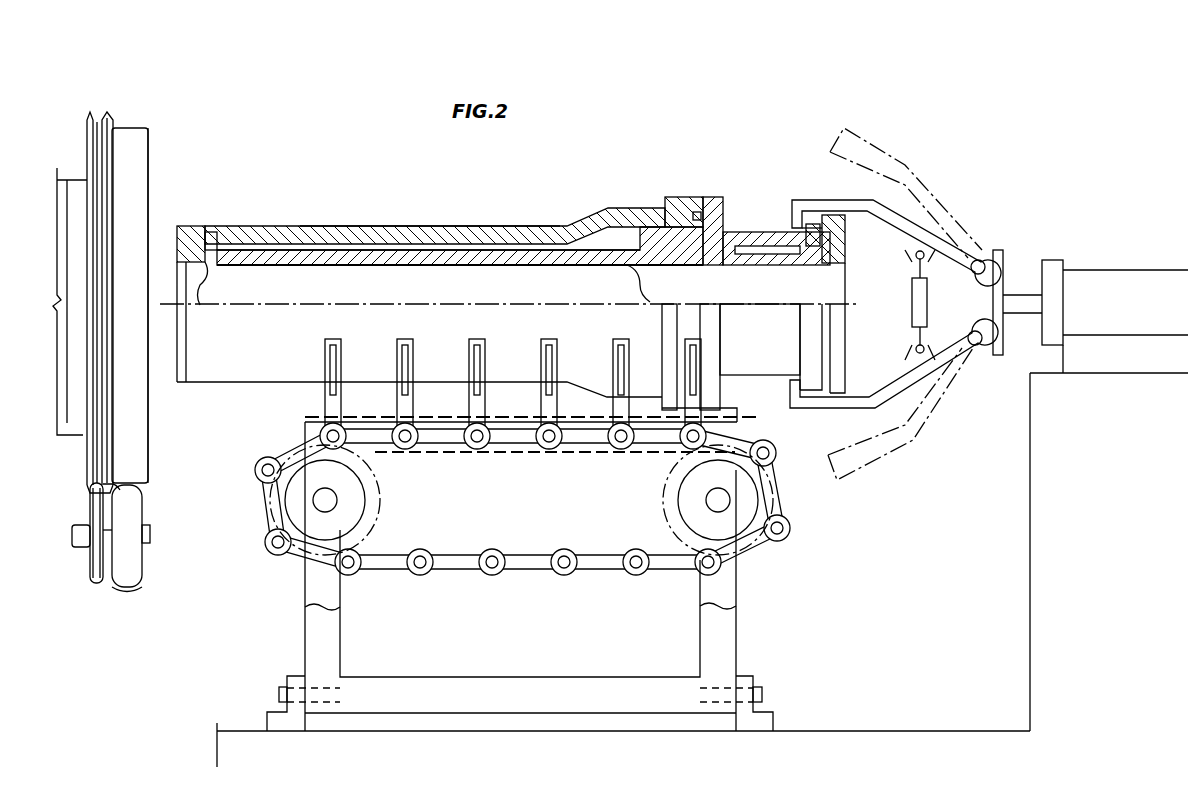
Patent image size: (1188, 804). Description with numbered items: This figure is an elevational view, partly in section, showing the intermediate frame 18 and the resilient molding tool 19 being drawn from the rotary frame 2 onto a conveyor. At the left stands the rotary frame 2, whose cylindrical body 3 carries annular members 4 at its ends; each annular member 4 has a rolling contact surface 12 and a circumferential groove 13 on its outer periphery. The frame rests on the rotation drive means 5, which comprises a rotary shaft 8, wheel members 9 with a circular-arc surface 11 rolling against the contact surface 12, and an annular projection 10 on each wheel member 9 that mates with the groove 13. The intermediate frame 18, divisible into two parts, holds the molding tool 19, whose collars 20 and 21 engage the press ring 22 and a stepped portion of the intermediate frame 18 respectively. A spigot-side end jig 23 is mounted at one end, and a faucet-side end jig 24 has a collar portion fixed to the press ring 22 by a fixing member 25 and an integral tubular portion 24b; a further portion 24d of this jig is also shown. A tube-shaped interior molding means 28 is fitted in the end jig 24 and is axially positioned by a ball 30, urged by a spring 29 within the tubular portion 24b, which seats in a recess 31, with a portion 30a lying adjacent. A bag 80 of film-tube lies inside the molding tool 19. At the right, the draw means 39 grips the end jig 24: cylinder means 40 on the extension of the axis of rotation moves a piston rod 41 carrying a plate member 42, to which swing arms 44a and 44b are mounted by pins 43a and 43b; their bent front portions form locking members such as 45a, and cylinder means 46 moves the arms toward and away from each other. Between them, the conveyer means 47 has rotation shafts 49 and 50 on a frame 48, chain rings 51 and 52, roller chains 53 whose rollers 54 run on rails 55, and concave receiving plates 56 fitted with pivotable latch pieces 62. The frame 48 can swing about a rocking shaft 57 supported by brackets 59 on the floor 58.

The rotary frame 2 is at (147, 127).
The cylindrical body 3 is at (80, 188).
The annular member 4 is at (150, 160).
The rotation drive means 5 is at (131, 603).
The rotary shaft 8 is at (78, 547).
The wheel member 9 is at (146, 571).
The annular projection 10 is at (97, 584).
The surface of circular-arc configuration 11 is at (140, 598).
The surface of contact 12 is at (140, 492).
The circumferential groove 13 is at (97, 488).
The intermediate frame 18 is at (383, 330).
The resilient molding tool 19 is at (457, 226).
The collar 20 is at (697, 215).
The collar 21 is at (214, 238).
The press ring 22 is at (682, 205).
The end jig 23 is at (180, 226).
The end jig 24 is at (752, 230).
The tubular portion 24b is at (781, 380).
The housing lower portion 24d is at (718, 382).
The fixing member 25 is at (720, 200).
The interior molding means 28 is at (836, 258).
The spring 29 is at (822, 238).
The ball 30 is at (508, 258).
The liner shoulder 30a is at (652, 240).
The recess 31 is at (748, 254).
The draw means 39 is at (1090, 232).
The cylinder means 40 is at (1135, 276).
The piston rod 41 is at (1019, 314).
The plate member 42 is at (1004, 262).
The pin 43a is at (982, 257).
The pin 43b is at (977, 347).
The swing arm 44a is at (890, 215).
The swing arm 44b is at (888, 397).
The locking member 45a is at (798, 208).
The cylinder means 46 is at (928, 302).
The conveyer means 47 is at (752, 564).
The frame 48 is at (317, 640).
The rotation shaft 49 is at (337, 500).
The rotation shaft 50 is at (708, 502).
The chain ring 51 is at (375, 526).
The chain ring 52 is at (665, 520).
The roller chain 53 is at (528, 578).
The roller 54 is at (548, 446).
The rail 55 is at (497, 454).
The receiving plate 56 is at (330, 402).
The rocking shaft 57 is at (764, 690).
The floor 58 is at (820, 733).
The bracket 59 is at (290, 722).
The pivotable latch piece 62 is at (548, 365).
The bag 80 is at (278, 266).